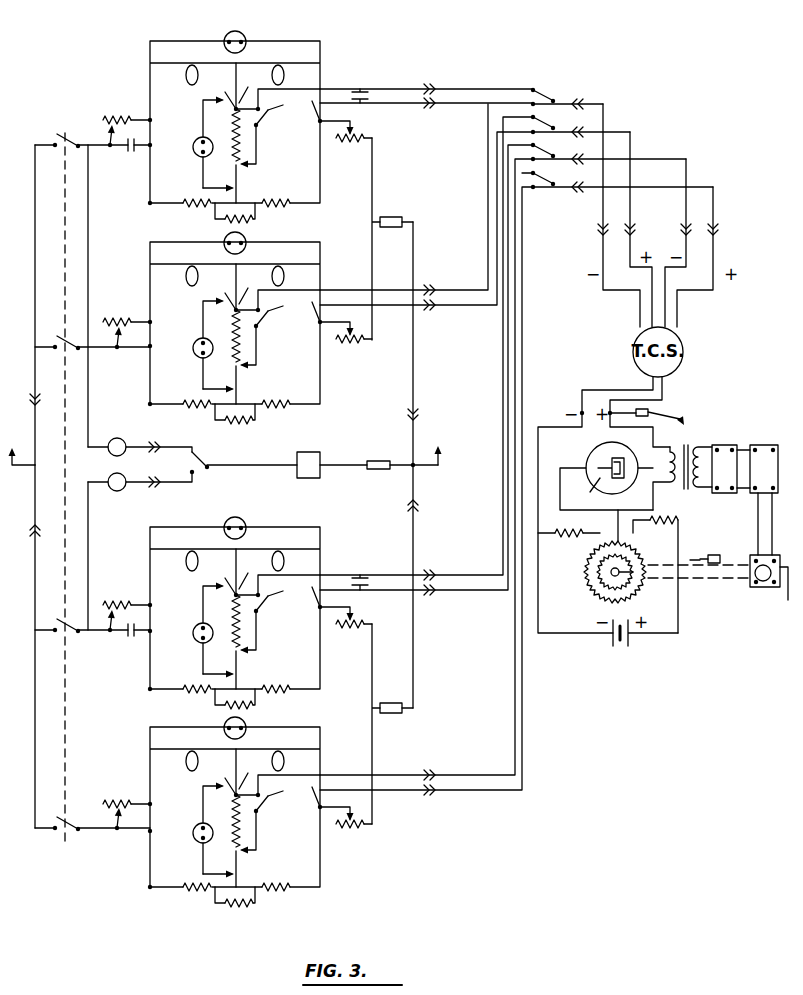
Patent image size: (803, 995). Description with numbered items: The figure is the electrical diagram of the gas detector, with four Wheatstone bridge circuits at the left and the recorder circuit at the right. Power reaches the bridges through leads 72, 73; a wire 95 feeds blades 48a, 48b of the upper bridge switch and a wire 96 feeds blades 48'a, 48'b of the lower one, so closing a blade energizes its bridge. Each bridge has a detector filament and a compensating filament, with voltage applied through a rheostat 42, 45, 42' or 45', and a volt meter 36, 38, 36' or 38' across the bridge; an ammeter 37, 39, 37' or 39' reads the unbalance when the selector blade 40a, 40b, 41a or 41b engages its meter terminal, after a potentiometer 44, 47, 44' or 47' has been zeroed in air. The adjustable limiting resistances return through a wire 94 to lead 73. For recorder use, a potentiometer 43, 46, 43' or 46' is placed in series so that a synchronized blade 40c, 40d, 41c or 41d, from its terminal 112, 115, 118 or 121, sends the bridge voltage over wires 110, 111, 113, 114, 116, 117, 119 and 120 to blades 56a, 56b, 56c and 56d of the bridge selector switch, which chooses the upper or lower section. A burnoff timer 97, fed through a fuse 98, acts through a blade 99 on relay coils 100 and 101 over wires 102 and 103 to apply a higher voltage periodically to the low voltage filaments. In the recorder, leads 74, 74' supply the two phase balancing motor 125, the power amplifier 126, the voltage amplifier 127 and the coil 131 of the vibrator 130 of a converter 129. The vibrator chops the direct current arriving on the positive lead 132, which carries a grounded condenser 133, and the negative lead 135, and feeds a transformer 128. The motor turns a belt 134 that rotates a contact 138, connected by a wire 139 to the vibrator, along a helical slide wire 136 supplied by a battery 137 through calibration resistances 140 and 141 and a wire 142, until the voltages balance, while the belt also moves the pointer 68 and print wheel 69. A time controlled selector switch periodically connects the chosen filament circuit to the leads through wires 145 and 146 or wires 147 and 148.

The volt meter 36 is at (217, 33).
The ammeter 37 is at (185, 151).
The volt meter 38 is at (216, 247).
The ammeter 39 is at (185, 352).
The switch blade 40a is at (218, 88).
The switch blade 40b is at (218, 289).
The switch blade 40c is at (265, 139).
The switch blade 40d is at (266, 340).
The switch blade 41a is at (218, 574).
The switch blade 41b is at (218, 774).
The switch blade 41c is at (266, 625).
The switch blade 41d is at (267, 825).
The rheostat 42 is at (123, 106).
The potentiometer 43 is at (224, 133).
The potentiometer 44 is at (200, 186).
The rheostat 45 is at (123, 309).
The potentiometer 46 is at (224, 334).
The potentiometer 47 is at (200, 387).
The switch blade 48a is at (68, 138).
The switch blade 48b is at (92, 357).
The switch blade 48'a is at (92, 617).
The switch blade 48'b is at (92, 836).
The switch blade 56a is at (545, 94).
The switch blade 56b is at (545, 126).
The switch blade 56c is at (545, 154).
The switch blade 56d is at (545, 182).
The pointer 68 is at (716, 555).
The print wheel 69 is at (694, 552).
The lead 72 is at (22, 466).
The lead 73 is at (436, 468).
The lead 74 is at (752, 524).
The lead 74' is at (773, 611).
The wire 94 is at (414, 379).
The wire 95 is at (35, 312).
The wire 96 is at (35, 646).
The burnoff timer 97 is at (304, 452).
The fuse 98 is at (382, 470).
The blade 99 is at (204, 462).
The relay coil 100 is at (125, 440).
The relay coil 101 is at (110, 476).
The wire 102 is at (88, 232).
The wire 103 is at (88, 500).
The recorder connection wire 110 is at (400, 88).
The recorder connection wire 111 is at (412, 104).
The principal terminal 112 is at (291, 112).
The wire 113 is at (460, 290).
The wire 114 is at (460, 310).
The terminal 115 is at (291, 323).
The wire 116 is at (460, 572).
The wire 117 is at (462, 594).
The terminal 118 is at (292, 608).
The wire 119 is at (460, 774).
The wire 120 is at (490, 794).
The terminal 121 is at (292, 808).
The balancing motor 125 is at (750, 584).
The power amplifier 126 is at (762, 442).
The voltage amplifier 127 is at (726, 445).
The transformer 128 is at (686, 447).
The converter 129 is at (598, 446).
The vibrator 130 is at (596, 466).
The coil 131 is at (598, 478).
The positive lead 132 is at (664, 391).
The grounded condenser 133 is at (660, 411).
The belt 134 is at (716, 582).
The negative lead 135 is at (612, 378).
The slide wire 136 is at (628, 556).
The battery 137 is at (630, 650).
The rotatable contact 138 is at (596, 588).
The wire 139 is at (600, 520).
The calibration resistance 140 is at (583, 538).
The calibration resistance 141 is at (668, 518).
The wire 142 is at (678, 634).
The wire 145 is at (604, 117).
The wire 146 is at (631, 138).
The wire 147 is at (687, 173).
The wire 148 is at (714, 215).
The volt meter 36' is at (223, 517).
The ammeter 37' is at (185, 637).
The volt meter 38' is at (254, 722).
The ammeter 39' is at (185, 837).
The rheostat 42' is at (125, 592).
The potentiometer 43' is at (224, 619).
The potentiometer 44' is at (196, 672).
The rheostat 45' is at (126, 790).
The potentiometer 46' is at (224, 818).
The potentiometer 47' is at (196, 871).